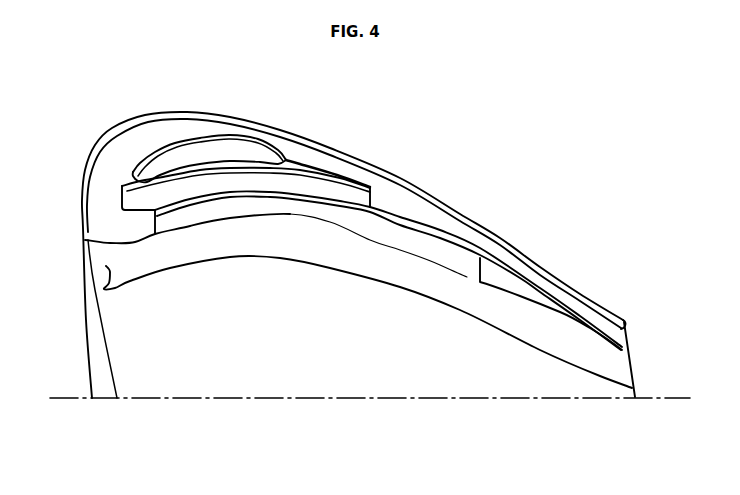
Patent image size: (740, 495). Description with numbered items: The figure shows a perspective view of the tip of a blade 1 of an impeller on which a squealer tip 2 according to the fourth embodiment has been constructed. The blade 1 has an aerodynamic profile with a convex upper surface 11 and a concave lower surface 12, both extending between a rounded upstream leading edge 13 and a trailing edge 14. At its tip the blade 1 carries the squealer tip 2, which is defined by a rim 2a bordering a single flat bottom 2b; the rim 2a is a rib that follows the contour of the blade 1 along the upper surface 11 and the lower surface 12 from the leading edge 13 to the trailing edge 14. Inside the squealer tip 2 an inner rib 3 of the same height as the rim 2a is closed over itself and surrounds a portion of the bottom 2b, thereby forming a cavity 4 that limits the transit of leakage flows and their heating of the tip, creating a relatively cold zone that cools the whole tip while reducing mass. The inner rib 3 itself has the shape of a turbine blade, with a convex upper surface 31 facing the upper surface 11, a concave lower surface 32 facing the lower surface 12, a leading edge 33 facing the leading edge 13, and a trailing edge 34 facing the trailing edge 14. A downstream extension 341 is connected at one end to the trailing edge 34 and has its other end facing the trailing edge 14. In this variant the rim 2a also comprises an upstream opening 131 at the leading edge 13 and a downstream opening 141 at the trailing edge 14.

The blade 1 is at (504, 195).
The squealer tip 2 is at (112, 178).
The rim 2a is at (188, 114).
The bottom 2b is at (408, 218).
The inner rib 3 is at (200, 150).
The convex upper surface of inner rib 31 is at (229, 153).
The concave lower surface of inner rib 32 is at (167, 187).
The leading edge of inner rib 33 is at (130, 183).
The trailing edge of inner rib 34 is at (287, 165).
The downstream extension 341 is at (332, 177).
The cavity 4 is at (183, 170).
The upper surface 11 is at (400, 182).
The lower surface 12 is at (245, 363).
The leading edge 13 is at (103, 272).
The upstream opening 131 is at (110, 226).
The trailing edge 14 is at (622, 368).
The downstream opening 141 is at (535, 297).